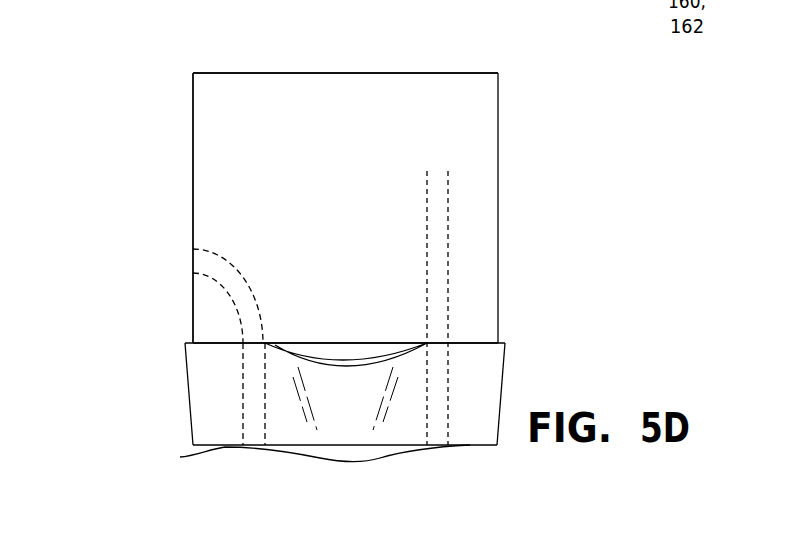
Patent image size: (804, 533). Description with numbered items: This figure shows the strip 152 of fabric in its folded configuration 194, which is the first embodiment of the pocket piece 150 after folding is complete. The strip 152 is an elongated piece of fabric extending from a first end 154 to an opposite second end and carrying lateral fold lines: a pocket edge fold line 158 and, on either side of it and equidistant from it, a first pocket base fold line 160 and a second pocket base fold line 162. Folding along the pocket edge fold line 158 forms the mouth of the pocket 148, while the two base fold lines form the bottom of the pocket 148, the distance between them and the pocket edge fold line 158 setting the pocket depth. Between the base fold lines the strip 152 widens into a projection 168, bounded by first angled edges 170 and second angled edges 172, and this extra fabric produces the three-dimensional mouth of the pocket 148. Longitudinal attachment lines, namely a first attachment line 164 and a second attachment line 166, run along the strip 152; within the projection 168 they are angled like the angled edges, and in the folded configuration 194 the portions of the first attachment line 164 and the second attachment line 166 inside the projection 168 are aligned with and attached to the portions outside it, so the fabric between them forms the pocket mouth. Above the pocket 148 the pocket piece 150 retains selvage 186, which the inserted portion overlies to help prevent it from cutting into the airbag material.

The pocket 148 is at (348, 358).
The pocket piece 150 is at (267, 183).
The strip 152 is at (458, 73).
The first end 154 is at (413, 73).
The pocket edge fold line 158 is at (480, 343).
The first pocket base fold line 160 is at (180, 457).
The second pocket base fold line 162 is at (325, 453).
The first attachment line 164 is at (215, 288).
The second attachment line 166 is at (448, 211).
The projection 168 is at (513, 385).
The first angled edges 170 is at (187, 375).
The second angled edges 172 is at (501, 394).
The selvage 186 is at (290, 127).
The folded configuration 194 is at (498, 104).